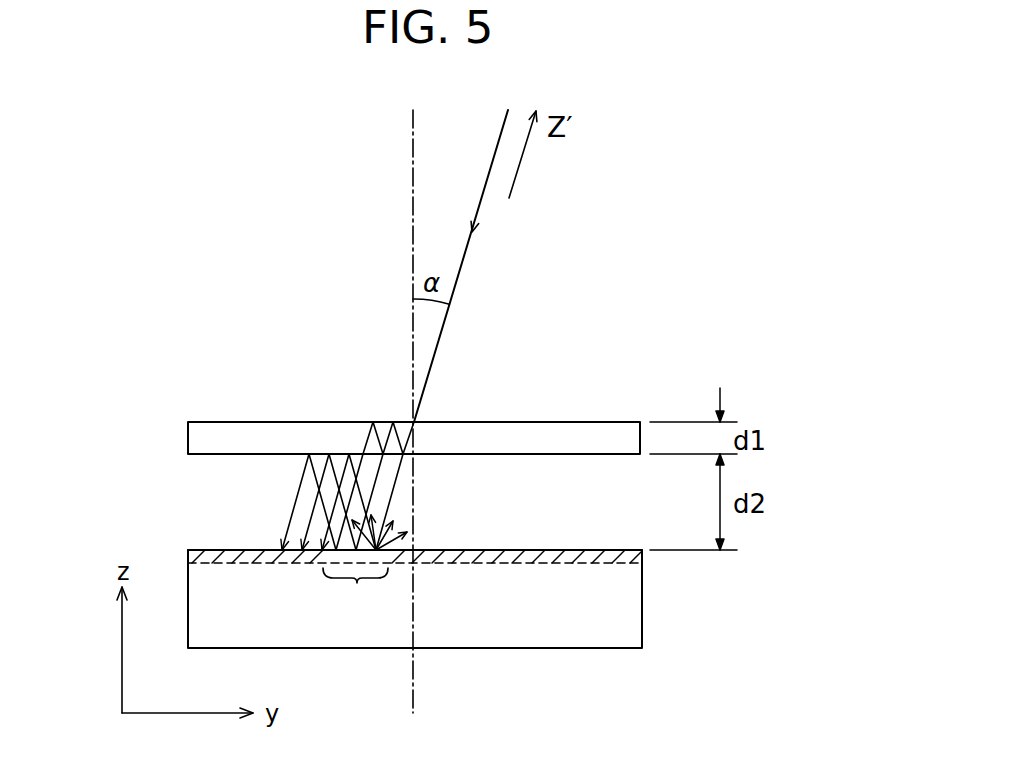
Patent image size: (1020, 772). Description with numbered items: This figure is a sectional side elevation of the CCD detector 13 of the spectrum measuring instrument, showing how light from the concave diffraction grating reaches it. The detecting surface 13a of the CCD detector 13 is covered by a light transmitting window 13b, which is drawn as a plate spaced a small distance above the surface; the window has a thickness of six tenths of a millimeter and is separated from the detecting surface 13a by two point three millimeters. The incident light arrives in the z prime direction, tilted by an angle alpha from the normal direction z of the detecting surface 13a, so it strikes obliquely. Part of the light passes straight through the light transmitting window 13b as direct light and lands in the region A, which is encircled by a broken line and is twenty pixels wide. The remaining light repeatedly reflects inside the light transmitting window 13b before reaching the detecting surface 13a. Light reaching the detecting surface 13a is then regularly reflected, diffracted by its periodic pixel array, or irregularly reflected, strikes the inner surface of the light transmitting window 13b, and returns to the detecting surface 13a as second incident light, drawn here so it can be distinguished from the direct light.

The CCD detector 13 is at (620, 608).
The detecting surface 13a is at (553, 550).
The light transmitting window 13b is at (562, 428).
The region A is at (355, 594).